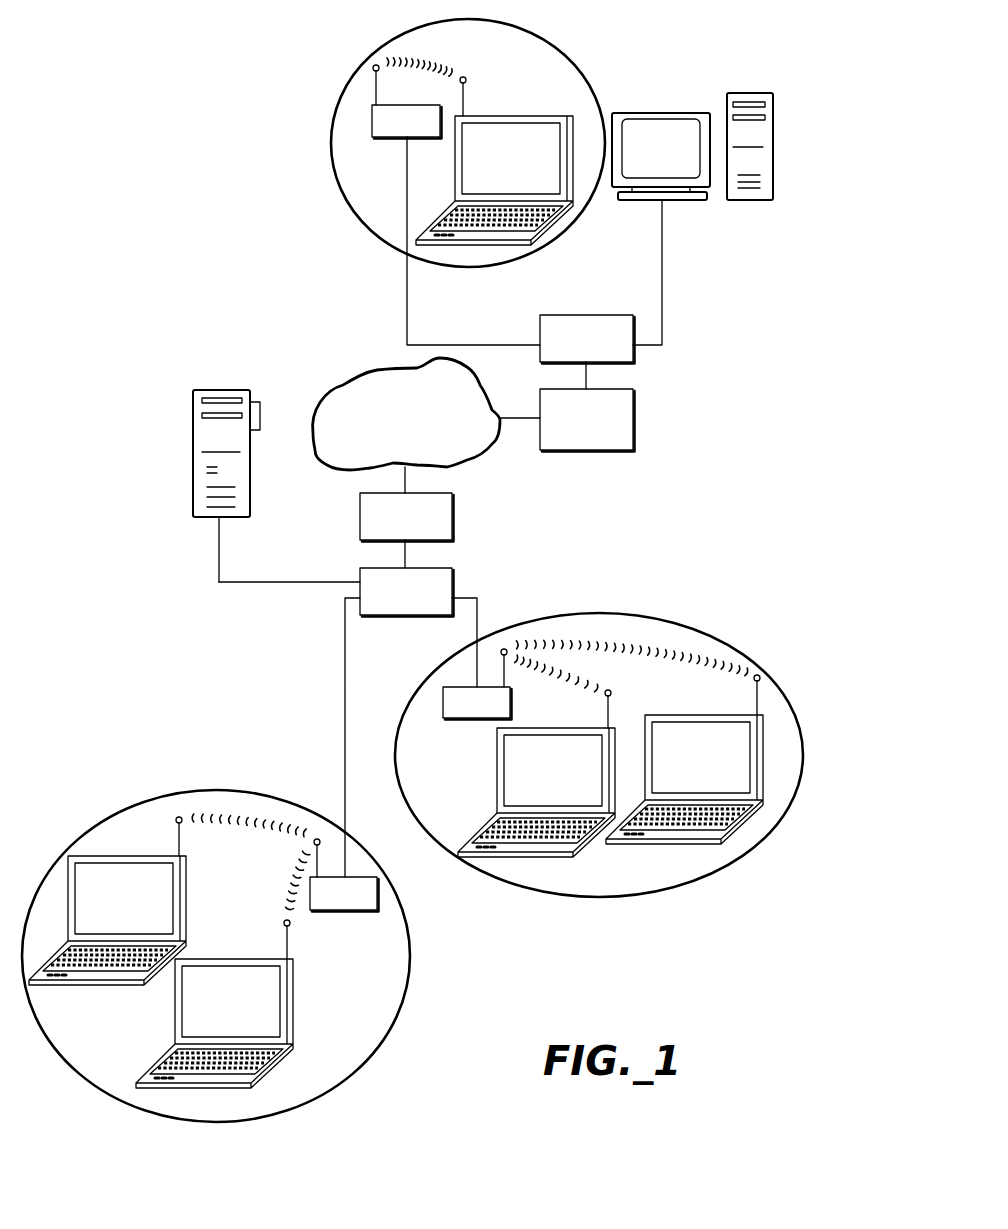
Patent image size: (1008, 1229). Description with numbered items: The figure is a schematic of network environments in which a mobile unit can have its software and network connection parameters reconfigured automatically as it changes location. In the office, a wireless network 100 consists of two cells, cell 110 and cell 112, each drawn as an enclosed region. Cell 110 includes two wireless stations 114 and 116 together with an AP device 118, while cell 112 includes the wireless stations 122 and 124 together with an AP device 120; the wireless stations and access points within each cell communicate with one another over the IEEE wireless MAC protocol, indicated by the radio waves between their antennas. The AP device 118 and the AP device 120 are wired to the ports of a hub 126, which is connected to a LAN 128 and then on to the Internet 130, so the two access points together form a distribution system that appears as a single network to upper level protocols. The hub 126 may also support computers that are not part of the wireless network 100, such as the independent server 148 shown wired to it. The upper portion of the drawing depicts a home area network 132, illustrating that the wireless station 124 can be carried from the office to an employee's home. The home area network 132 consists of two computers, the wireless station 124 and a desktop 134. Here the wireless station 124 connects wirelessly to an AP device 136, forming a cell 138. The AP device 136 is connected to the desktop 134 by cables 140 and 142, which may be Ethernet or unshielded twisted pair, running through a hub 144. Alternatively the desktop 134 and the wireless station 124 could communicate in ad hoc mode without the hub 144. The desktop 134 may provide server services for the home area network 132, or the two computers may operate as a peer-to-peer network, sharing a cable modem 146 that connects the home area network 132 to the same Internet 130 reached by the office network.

The wireless network 100 is at (163, 787).
The cell 110 is at (410, 963).
The cell 112 is at (595, 897).
The wireless station 114 is at (88, 980).
The wireless station 116 is at (213, 1083).
The AP device 118 is at (363, 910).
The AP device 120 is at (480, 718).
The wireless station 122 is at (515, 852).
The wireless station 124 is at (508, 116).
The hub 126 is at (453, 583).
The LAN 128 is at (453, 517).
The Internet 130 is at (375, 372).
The home area network 132 is at (327, 79).
The desktop 134 is at (640, 112).
The AP device 136 is at (395, 137).
The cell 138 is at (357, 212).
The cable 140 is at (405, 277).
The cable 142 is at (663, 267).
The hub 144 is at (593, 315).
The cable modem 146 is at (635, 398).
The independent server 148 is at (203, 390).